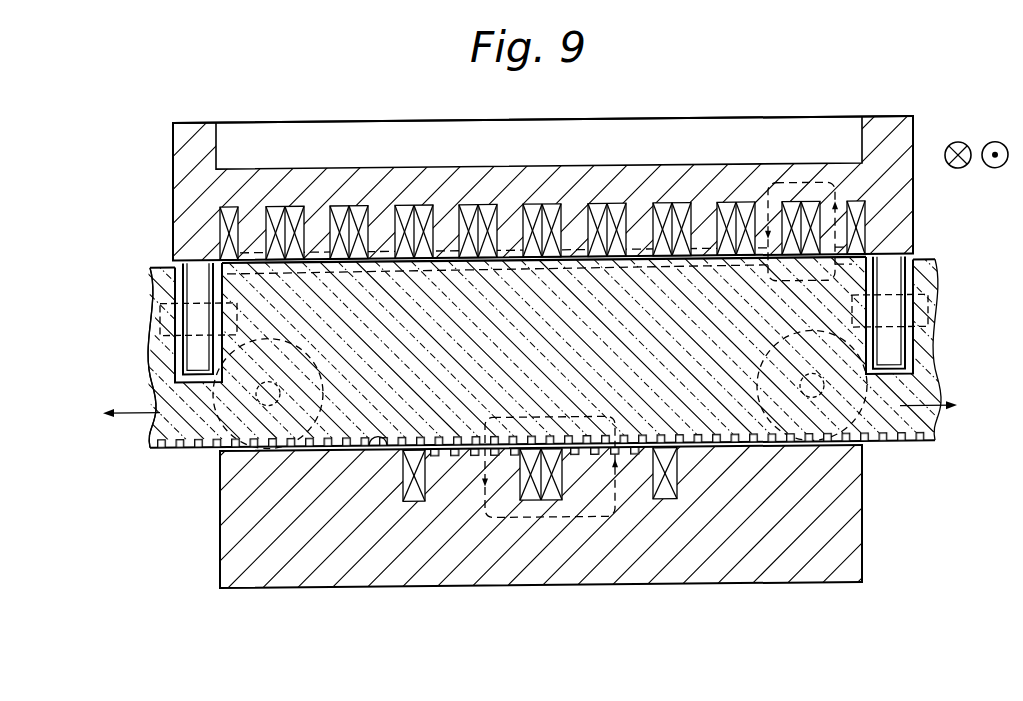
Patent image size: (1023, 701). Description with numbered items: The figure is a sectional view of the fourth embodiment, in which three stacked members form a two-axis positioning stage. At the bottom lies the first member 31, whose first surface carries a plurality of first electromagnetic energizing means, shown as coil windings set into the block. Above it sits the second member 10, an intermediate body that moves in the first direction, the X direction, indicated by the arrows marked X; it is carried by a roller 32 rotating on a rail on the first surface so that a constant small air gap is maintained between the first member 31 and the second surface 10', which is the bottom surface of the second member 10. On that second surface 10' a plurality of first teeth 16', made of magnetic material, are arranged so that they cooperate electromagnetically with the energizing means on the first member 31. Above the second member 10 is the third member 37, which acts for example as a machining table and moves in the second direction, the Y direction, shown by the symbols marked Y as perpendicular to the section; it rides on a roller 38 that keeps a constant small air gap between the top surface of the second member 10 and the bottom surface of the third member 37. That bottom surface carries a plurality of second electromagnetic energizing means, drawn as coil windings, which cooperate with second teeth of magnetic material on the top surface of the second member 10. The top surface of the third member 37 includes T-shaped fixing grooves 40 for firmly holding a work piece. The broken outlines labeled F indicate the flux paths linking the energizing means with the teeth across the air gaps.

The second member 10 is at (511, 353).
The second surface 10' is at (543, 465).
The first teeth 16' is at (357, 531).
The first member 31 is at (601, 592).
The roller 32 is at (213, 394).
The third member 37 is at (690, 97).
The roller 38 is at (193, 278).
The T-shaped fixing grooves 40 is at (454, 121).
The magnetic flux path F is at (790, 186).
The first direction (X-axis) X is at (531, 409).
The second direction (Y-axis) Y is at (976, 172).